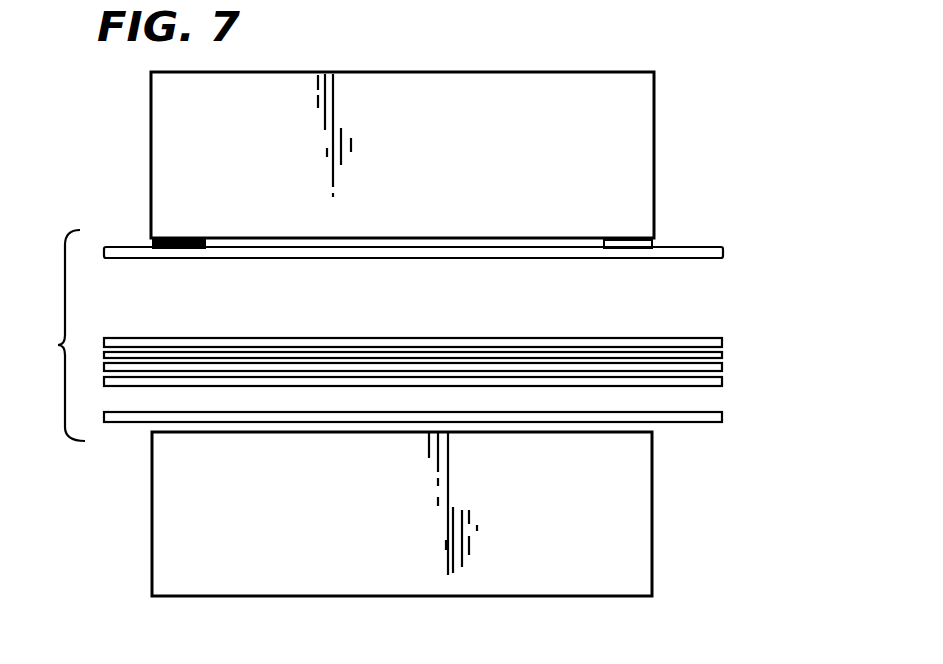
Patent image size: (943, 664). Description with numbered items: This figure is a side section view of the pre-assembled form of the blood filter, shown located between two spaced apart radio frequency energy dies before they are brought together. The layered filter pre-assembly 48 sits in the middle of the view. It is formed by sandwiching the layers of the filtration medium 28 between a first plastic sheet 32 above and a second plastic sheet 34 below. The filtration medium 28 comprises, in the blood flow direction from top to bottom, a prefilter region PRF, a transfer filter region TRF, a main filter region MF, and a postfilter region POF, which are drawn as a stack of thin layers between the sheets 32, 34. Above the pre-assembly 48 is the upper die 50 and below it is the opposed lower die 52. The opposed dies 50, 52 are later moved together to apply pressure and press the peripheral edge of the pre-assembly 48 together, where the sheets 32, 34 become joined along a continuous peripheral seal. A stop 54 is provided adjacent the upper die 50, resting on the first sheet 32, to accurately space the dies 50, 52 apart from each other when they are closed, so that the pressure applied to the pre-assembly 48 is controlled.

The die 50 is at (612, 98).
The die 52 is at (640, 516).
The stop 54 is at (192, 238).
The first plastic sheet 32 is at (723, 251).
The second plastic sheet 34 is at (724, 417).
The pre-assembly 48 is at (53, 335).
The filtration medium 28 is at (488, 326).
The prefilter region PRF is at (724, 342).
The transfer filter region TRF is at (724, 355).
The main filter region MF is at (724, 366).
The postfilter region POF is at (724, 381).